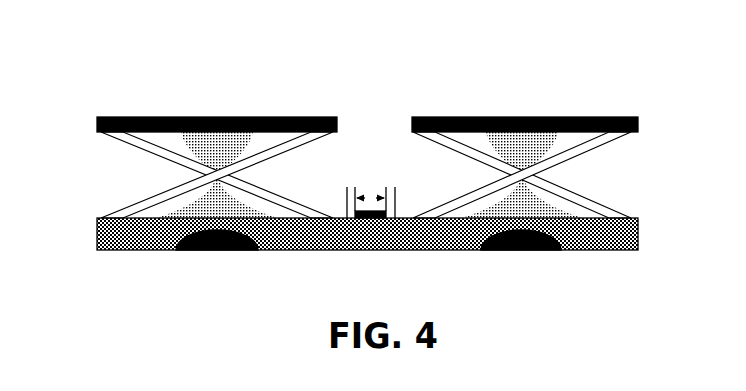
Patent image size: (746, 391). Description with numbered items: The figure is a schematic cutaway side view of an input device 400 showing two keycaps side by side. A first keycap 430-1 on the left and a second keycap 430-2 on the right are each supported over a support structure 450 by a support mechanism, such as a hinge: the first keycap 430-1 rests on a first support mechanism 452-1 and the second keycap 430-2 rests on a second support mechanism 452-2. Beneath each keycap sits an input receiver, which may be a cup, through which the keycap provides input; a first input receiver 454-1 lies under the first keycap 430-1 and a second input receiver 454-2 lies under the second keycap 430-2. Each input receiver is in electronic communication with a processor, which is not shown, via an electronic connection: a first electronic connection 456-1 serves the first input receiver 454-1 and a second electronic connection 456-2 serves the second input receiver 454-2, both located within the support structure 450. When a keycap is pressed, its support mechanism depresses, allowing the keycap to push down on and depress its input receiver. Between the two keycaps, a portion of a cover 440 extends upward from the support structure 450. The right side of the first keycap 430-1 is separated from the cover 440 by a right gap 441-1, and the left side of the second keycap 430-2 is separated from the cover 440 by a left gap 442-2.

The input device 400 is at (297, 66).
The first keycap 430-1 is at (103, 117).
The second keycap 430-2 is at (631, 117).
The cover 440 is at (370, 210).
The right gap 441-1 is at (345, 198).
The left gap 442-2 is at (397, 198).
The support structure 450 is at (638, 250).
The support mechanism 452-1 is at (207, 175).
The support mechanism 452-2 is at (533, 175).
The input receiver 454-1 is at (198, 208).
The input receiver 454-2 is at (543, 210).
The electronic connection 456-1 is at (216, 251).
The electronic connection 456-2 is at (525, 251).